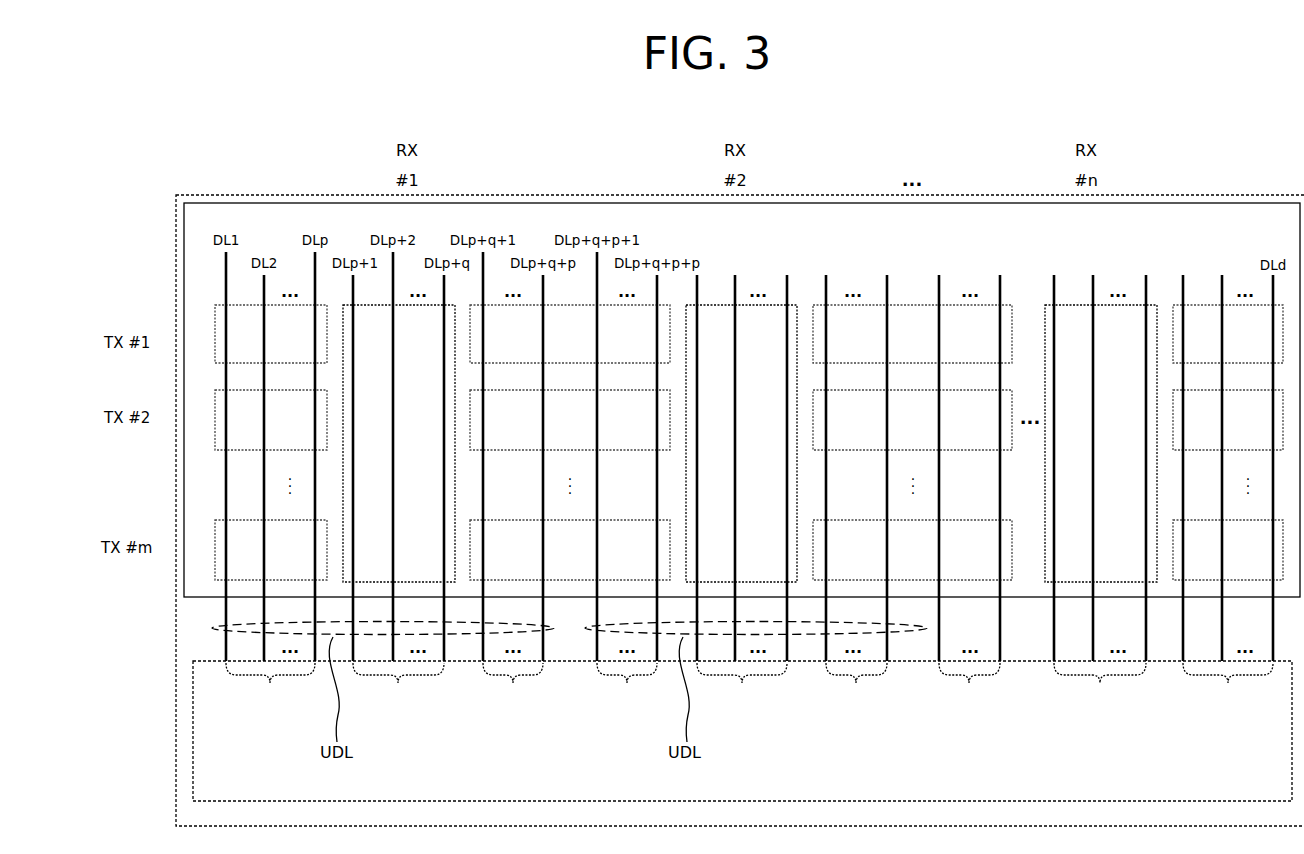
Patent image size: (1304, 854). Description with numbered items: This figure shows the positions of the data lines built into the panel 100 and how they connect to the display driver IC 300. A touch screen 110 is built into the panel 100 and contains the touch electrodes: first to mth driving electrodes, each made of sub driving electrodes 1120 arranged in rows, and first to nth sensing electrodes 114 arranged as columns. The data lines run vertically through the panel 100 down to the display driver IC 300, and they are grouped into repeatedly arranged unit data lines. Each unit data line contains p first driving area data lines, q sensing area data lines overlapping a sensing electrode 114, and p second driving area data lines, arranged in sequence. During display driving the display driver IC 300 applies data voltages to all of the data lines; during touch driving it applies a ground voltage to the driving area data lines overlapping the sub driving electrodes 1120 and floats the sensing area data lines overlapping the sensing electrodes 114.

The panel 100 is at (176, 225).
The touch screen 110 is at (184, 266).
The sub driving electrodes 1120 is at (215, 308).
The sensing electrodes 114 is at (343, 480).
The display driver IC 300 is at (193, 731).